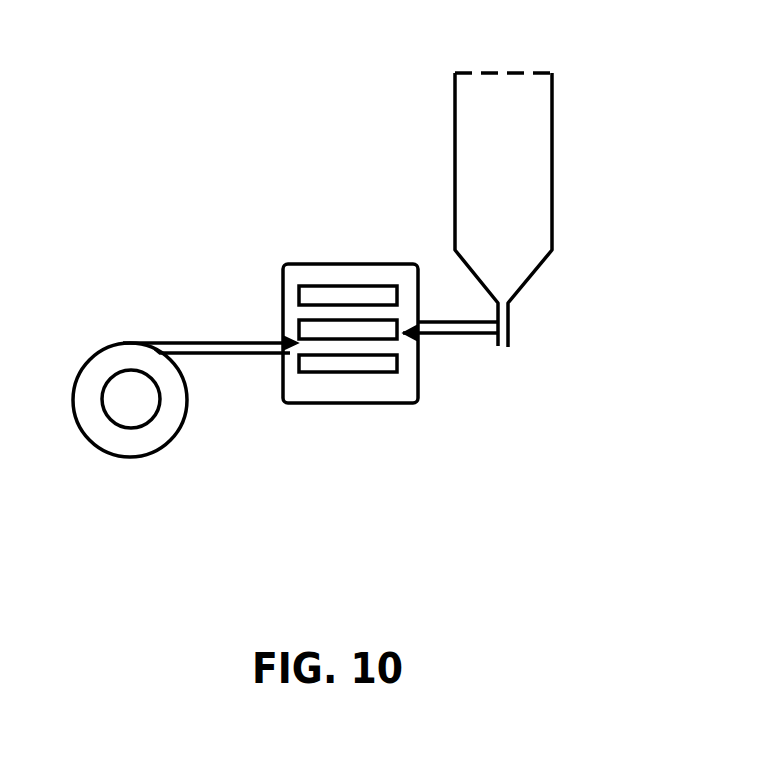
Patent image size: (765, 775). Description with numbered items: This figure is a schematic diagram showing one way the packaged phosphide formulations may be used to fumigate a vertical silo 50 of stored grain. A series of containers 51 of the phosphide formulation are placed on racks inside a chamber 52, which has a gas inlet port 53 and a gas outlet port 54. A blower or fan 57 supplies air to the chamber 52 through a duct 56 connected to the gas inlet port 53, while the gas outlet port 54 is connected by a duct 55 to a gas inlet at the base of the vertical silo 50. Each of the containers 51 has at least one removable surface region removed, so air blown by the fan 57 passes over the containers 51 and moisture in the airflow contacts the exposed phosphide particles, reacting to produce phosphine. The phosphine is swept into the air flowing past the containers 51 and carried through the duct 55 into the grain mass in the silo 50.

The vertical silo 50 is at (552, 165).
The containers 51 is at (350, 297).
The chamber 52 is at (302, 403).
The gas inlet port 53 is at (290, 340).
The gas outlet port 54 is at (410, 343).
The duct 55 is at (463, 337).
The duct 56 is at (203, 343).
The blower or fan 57 is at (122, 360).